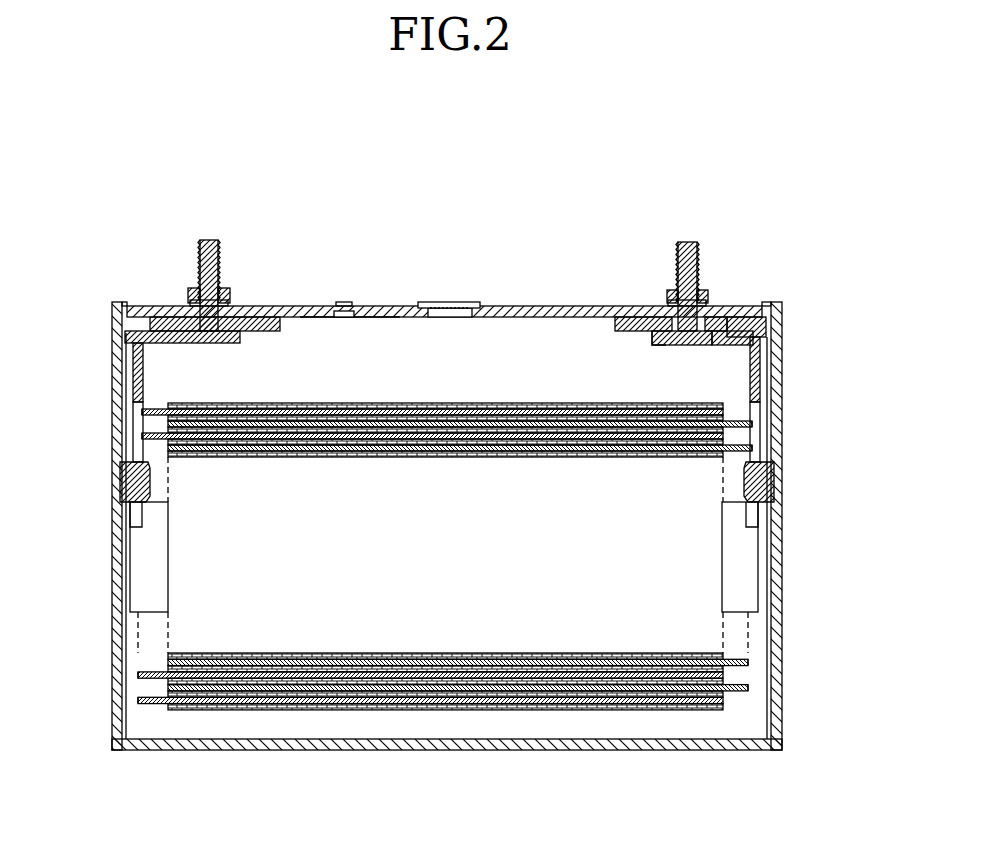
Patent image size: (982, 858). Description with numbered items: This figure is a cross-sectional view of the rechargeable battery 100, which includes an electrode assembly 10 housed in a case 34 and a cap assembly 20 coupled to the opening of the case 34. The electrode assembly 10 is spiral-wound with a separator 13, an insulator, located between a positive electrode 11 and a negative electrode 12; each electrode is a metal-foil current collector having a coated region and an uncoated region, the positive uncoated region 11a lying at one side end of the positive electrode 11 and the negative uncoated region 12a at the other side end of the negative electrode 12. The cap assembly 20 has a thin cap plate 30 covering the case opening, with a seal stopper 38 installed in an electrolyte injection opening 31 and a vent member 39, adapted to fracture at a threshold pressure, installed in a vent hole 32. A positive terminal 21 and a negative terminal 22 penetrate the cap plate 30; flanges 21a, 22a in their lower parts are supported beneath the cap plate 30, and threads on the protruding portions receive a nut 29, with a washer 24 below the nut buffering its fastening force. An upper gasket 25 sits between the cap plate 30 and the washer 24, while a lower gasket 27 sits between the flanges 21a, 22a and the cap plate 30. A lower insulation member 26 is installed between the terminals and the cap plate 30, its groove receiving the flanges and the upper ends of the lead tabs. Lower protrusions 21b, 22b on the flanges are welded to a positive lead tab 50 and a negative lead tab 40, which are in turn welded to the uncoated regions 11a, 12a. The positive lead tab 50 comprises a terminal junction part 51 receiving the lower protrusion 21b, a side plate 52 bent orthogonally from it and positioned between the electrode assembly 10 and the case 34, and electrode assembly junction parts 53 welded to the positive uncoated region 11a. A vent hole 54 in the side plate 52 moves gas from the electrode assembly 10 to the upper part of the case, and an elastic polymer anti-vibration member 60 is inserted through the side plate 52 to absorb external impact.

The rechargeable battery 100 is at (430, 183).
The electrode assembly 10 is at (445, 608).
The positive electrode 11 is at (430, 607).
The positive uncoated region 11a is at (150, 700).
The negative electrode 12 is at (460, 615).
The negative uncoated region 12a is at (722, 692).
The separator 13 is at (443, 685).
The cap assembly 20 is at (481, 311).
The positive terminal 21 is at (202, 314).
The flange 21a is at (225, 333).
The lower protrusion 21b is at (212, 343).
The negative terminal 22 is at (719, 317).
The flange 22a is at (700, 346).
The lower protrusion 22b is at (684, 345).
The washer 24 is at (650, 316).
The upper gasket 25 is at (722, 318).
The lower insulation member 26 is at (766, 330).
The lower gasket 27 is at (666, 346).
The nut 29 is at (196, 298).
The cap plate 30 is at (444, 315).
The electrolyte injection opening 31 is at (345, 318).
The vent hole 32 is at (448, 318).
The case 34 is at (777, 622).
The seal stopper 38 is at (345, 304).
The vent member 39 is at (445, 302).
The negative lead tab 40 is at (481, 526).
The positive lead tab 50 is at (404, 536).
The terminal junction part 51 is at (166, 345).
The side plate 52 is at (127, 390).
The electrode assembly junction part 53 is at (152, 562).
The vent hole 54 is at (140, 442).
The anti-vibration member 60 is at (120, 484).